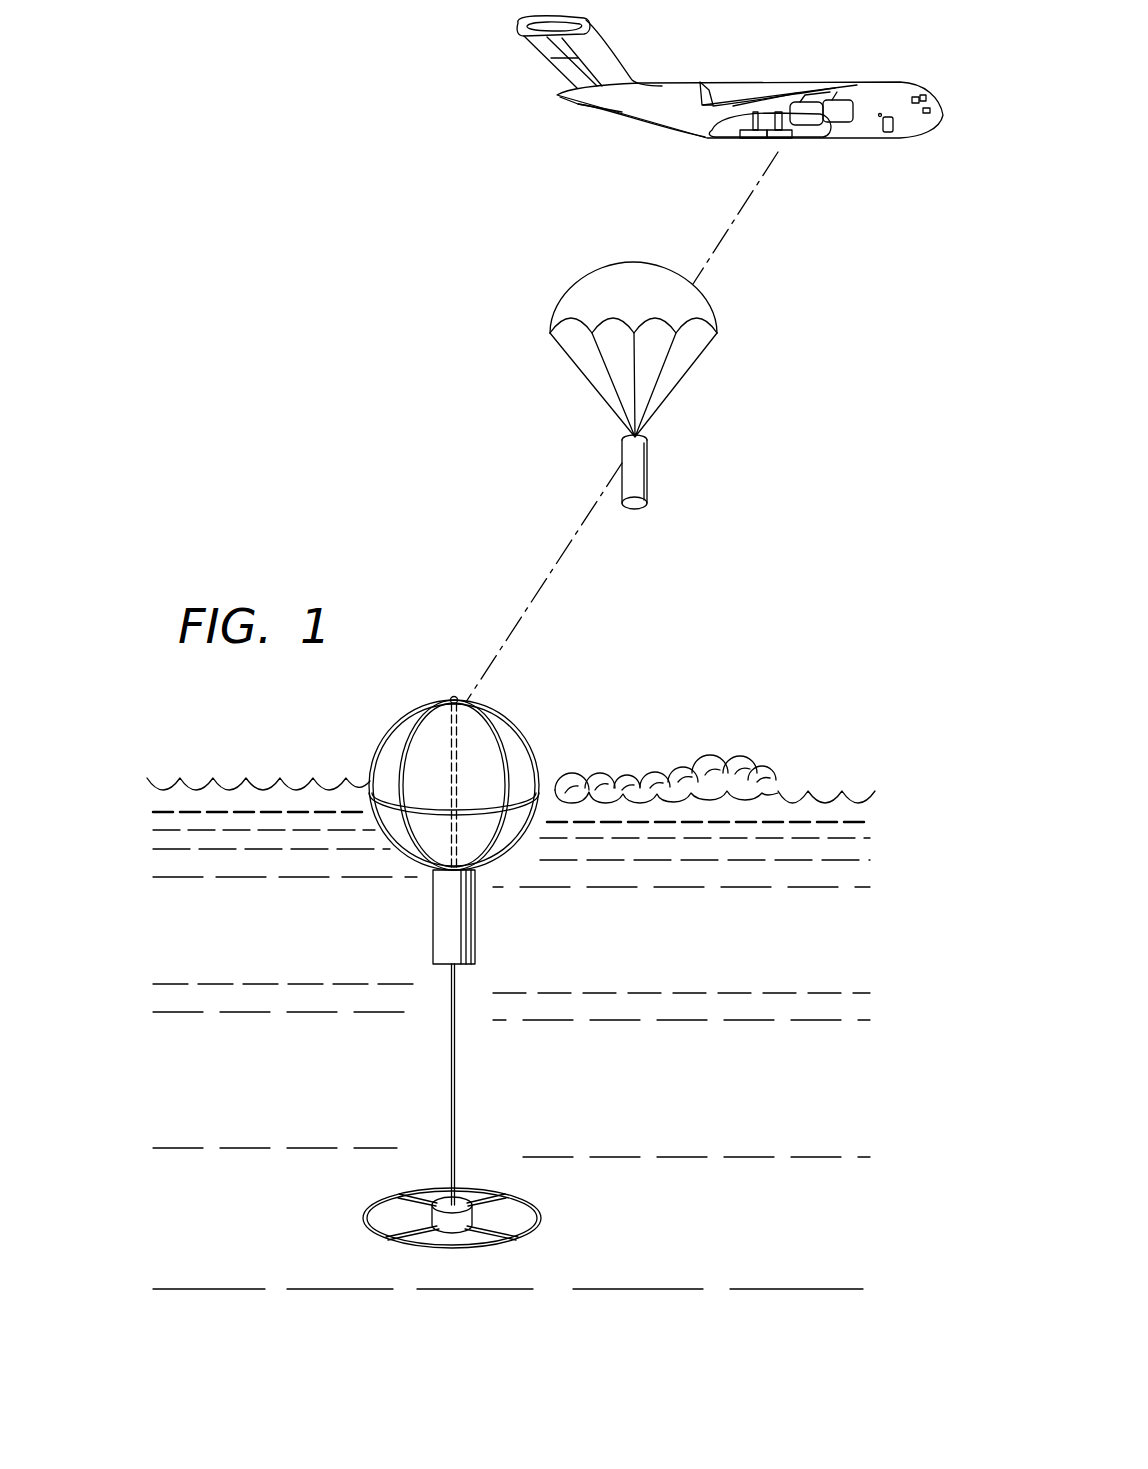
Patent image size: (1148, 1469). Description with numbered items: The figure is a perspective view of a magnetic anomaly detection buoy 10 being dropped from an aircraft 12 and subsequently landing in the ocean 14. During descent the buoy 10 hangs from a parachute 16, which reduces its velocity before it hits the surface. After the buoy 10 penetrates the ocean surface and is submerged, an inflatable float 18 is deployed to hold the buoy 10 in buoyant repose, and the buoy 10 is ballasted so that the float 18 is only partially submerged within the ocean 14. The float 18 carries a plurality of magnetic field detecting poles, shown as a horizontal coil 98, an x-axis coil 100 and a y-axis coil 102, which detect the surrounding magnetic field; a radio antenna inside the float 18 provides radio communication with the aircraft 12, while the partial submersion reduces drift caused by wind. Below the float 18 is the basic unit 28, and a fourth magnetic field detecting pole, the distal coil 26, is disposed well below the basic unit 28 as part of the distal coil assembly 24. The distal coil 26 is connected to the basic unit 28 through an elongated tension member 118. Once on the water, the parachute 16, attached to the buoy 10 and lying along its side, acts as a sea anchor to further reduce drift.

The magnetic anomaly detection buoy 10 is at (668, 478).
The aircraft 12 is at (505, 101).
The ocean 14 is at (808, 817).
The parachute 16 is at (605, 293).
The inflatable float 18 is at (513, 745).
The distal coil assembly 24 is at (498, 1219).
The distal coil 26 is at (532, 1248).
The basic unit 28 is at (448, 911).
The horizontal coil 98 is at (463, 817).
The x-axis coil 100 is at (402, 740).
The y-axis coil 102 is at (490, 709).
The elongated tension member 118 is at (456, 1056).